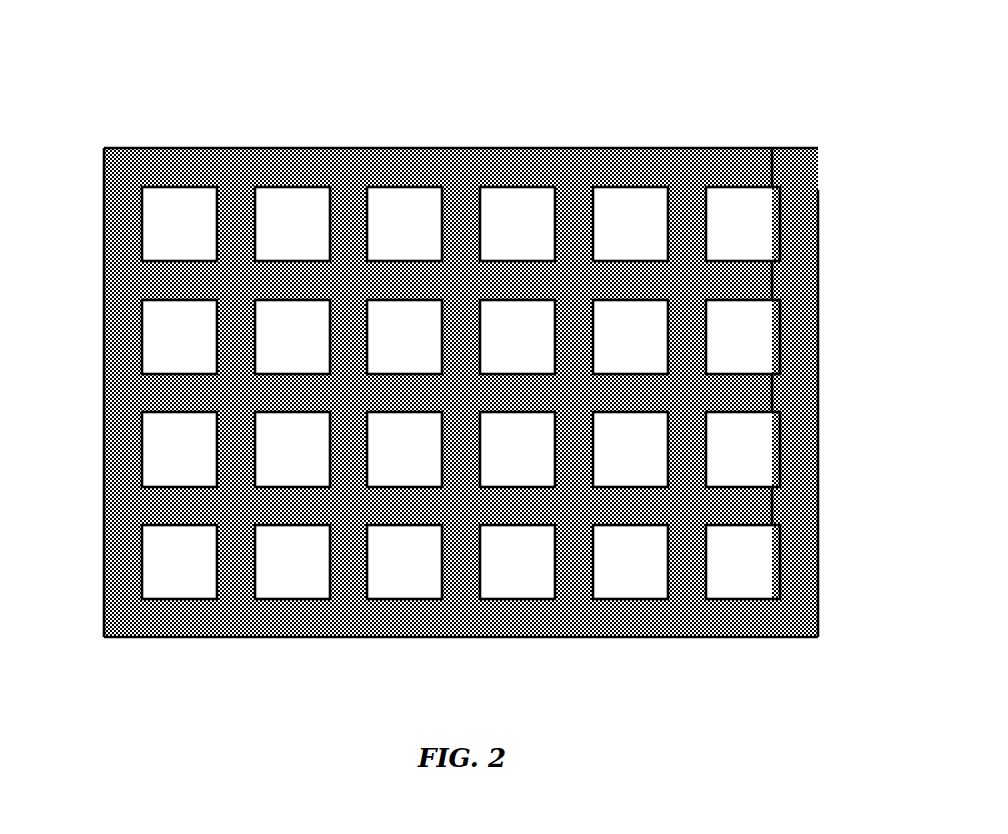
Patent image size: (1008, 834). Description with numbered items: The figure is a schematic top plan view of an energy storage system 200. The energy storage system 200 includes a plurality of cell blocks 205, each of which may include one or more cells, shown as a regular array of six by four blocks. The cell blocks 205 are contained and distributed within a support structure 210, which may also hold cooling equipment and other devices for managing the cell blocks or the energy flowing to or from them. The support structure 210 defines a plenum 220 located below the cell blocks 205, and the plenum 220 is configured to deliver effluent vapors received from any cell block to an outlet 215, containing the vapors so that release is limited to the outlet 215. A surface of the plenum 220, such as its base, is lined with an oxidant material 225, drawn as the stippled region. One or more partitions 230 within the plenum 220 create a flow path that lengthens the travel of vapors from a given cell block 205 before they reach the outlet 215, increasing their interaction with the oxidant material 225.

The energy storage system 200 is at (462, 340).
The cell blocks 205 is at (385, 183).
The support structure 210 is at (818, 297).
The outlet 215 is at (818, 173).
The plenum 220 is at (497, 162).
The oxidant material 225 is at (235, 167).
The partitions 230 is at (774, 397).